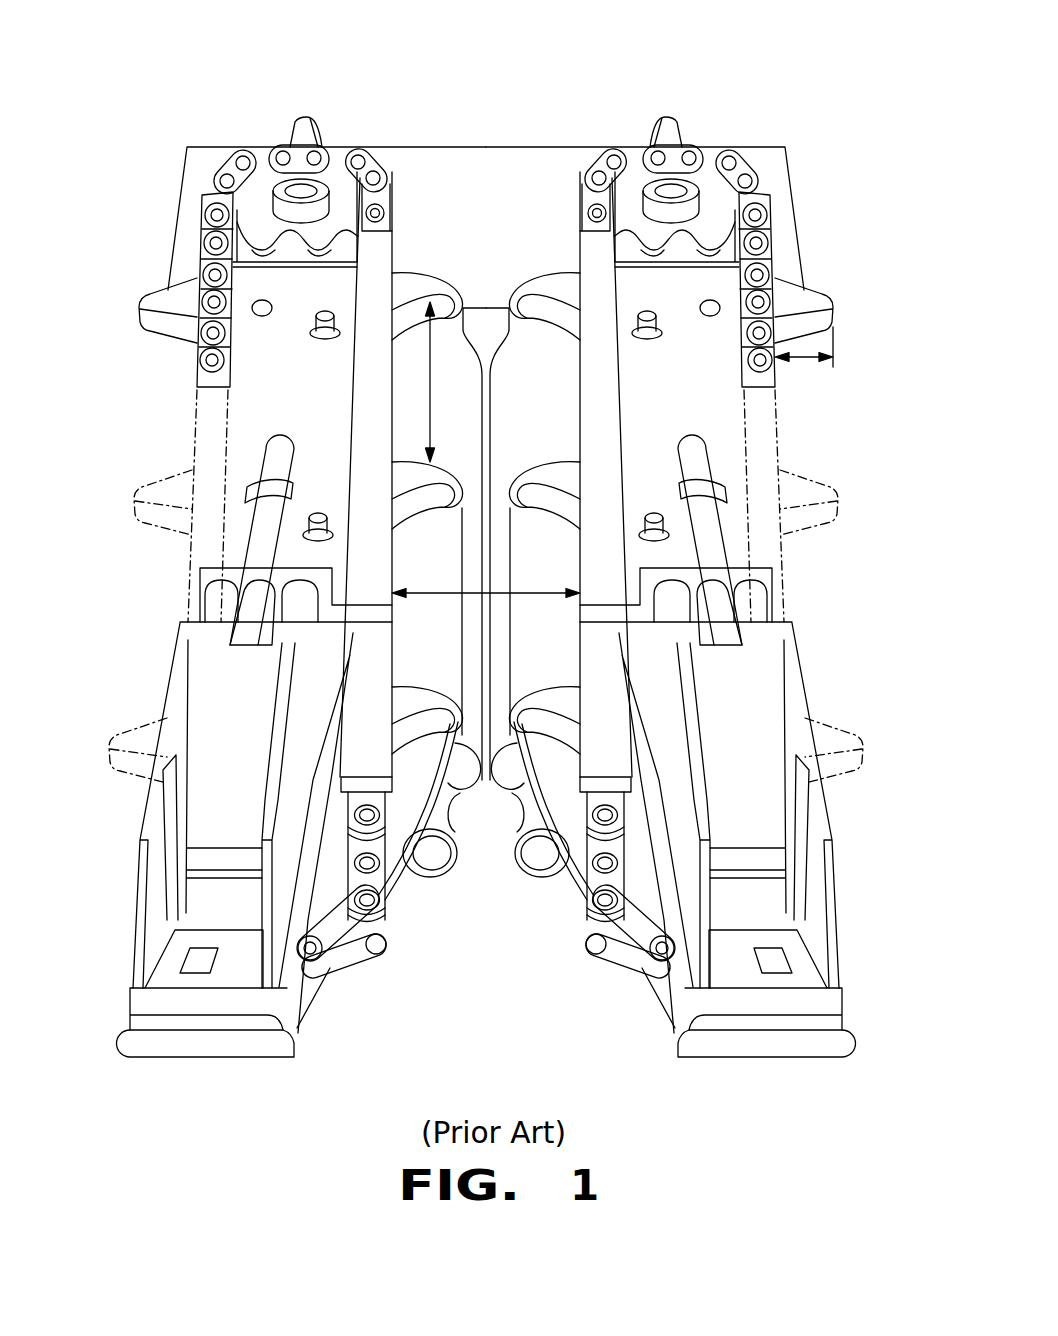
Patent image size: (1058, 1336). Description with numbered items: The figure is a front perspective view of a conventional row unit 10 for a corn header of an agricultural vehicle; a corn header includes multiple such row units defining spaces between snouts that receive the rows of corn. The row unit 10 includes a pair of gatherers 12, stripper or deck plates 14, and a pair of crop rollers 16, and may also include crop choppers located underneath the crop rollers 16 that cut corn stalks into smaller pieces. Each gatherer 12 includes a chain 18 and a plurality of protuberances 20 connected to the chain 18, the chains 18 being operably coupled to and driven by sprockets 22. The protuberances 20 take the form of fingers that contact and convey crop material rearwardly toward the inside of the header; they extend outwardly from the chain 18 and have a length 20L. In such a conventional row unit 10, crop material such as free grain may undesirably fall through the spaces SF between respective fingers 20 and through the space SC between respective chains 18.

The row unit 10 is at (560, 100).
The gatherer 12 is at (163, 412).
The stripper plates 14 is at (572, 833).
The crop rollers 16 is at (430, 877).
The chain 18 is at (208, 200).
The protuberances 20 is at (142, 296).
The length 20L is at (805, 362).
The sprockets 22 is at (258, 200).